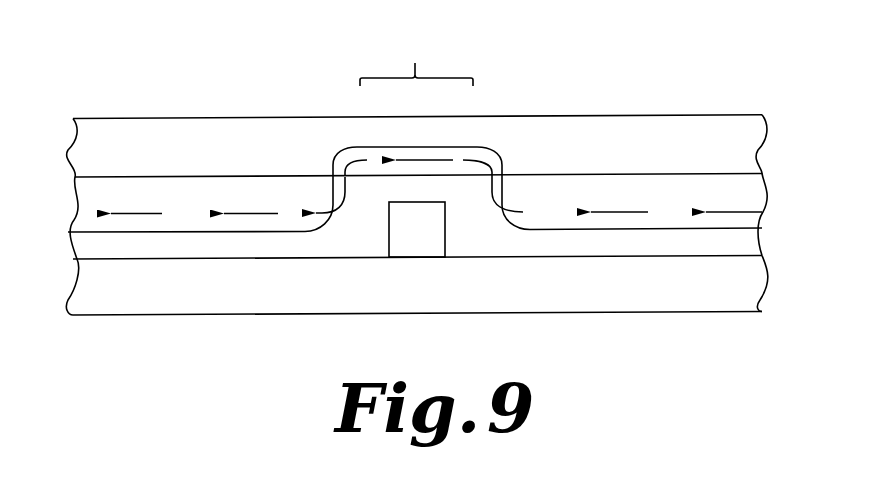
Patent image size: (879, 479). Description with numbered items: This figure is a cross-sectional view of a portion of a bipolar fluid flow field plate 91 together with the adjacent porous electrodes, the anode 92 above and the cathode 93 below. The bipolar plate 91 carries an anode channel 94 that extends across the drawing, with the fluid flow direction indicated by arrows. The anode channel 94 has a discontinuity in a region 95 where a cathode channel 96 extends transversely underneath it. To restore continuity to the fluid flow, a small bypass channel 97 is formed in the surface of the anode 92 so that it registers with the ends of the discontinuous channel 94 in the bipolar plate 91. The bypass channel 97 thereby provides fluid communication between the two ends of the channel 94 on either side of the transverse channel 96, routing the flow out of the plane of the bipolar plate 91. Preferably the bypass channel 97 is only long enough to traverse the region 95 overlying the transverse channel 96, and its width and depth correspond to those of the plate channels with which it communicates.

The bipolar fluid flow field plate 91 is at (743, 244).
The anode 92 is at (745, 145).
The cathode 93 is at (745, 285).
The anode channel 94 is at (88, 215).
The region 95 is at (416, 55).
The cathode channel 96 is at (415, 243).
The bypass channel 97 is at (488, 158).